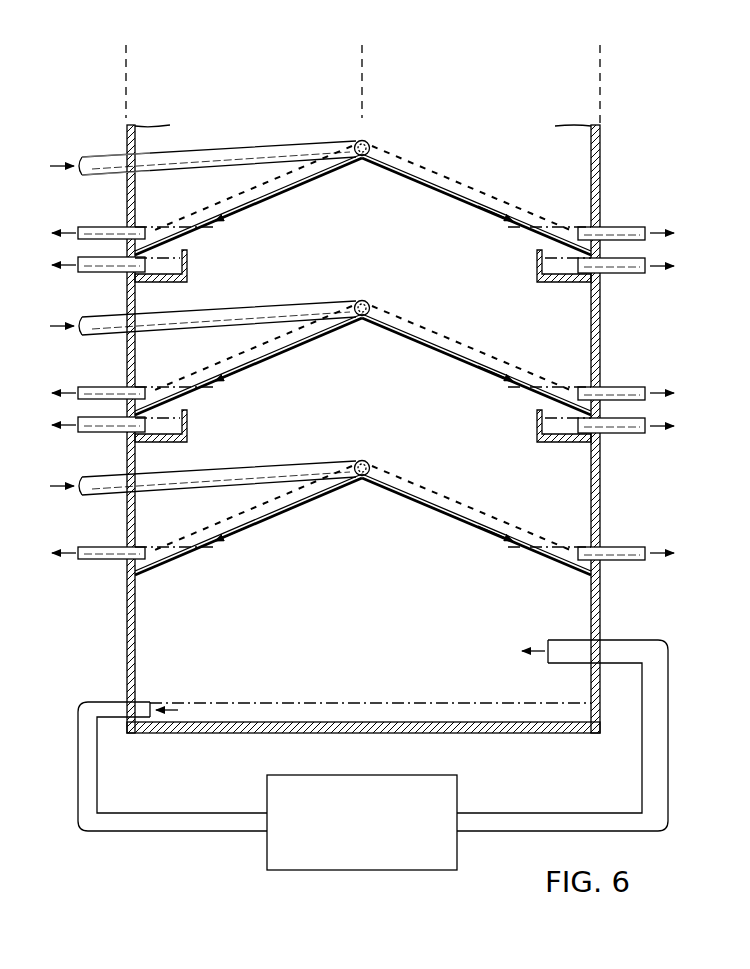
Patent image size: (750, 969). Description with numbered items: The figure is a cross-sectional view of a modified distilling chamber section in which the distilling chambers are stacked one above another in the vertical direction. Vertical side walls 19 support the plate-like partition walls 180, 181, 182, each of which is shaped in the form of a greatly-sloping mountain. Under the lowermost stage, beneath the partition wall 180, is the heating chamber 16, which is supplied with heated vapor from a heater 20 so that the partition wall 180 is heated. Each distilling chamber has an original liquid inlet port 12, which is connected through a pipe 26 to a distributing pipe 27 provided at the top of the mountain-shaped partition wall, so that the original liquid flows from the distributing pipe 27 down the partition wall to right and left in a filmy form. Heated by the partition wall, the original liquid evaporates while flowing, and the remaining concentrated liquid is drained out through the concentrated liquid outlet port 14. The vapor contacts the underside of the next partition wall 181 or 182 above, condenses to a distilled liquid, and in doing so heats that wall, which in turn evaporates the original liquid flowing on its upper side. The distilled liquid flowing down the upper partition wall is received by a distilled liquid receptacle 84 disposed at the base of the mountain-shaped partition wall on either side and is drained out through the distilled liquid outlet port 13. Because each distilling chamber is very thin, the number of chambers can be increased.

The original liquid inlet port 12 is at (92, 160).
The distilled liquid outlet port 13 is at (112, 272).
The concentrated liquid outlet port 14 is at (110, 228).
The heating chamber 16 is at (470, 672).
The side wall 19 is at (127, 130).
The heater 20 is at (373, 837).
The pipe 26 is at (238, 145).
The distributing pipe 27 is at (369, 142).
The distilled liquid receptacle 84 is at (190, 262).
The partition wall 180 is at (434, 514).
The partition wall 181 is at (434, 351).
The partition wall 182 is at (434, 191).